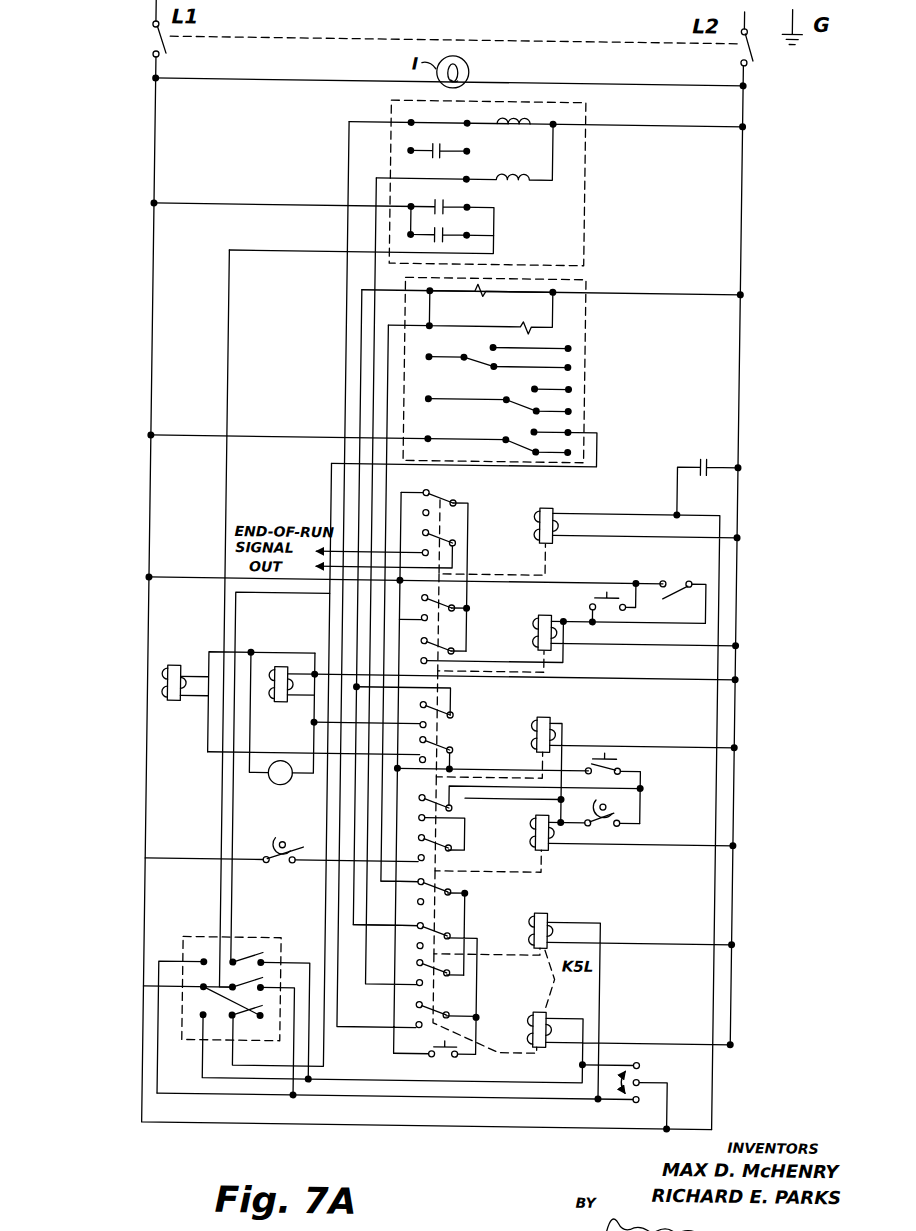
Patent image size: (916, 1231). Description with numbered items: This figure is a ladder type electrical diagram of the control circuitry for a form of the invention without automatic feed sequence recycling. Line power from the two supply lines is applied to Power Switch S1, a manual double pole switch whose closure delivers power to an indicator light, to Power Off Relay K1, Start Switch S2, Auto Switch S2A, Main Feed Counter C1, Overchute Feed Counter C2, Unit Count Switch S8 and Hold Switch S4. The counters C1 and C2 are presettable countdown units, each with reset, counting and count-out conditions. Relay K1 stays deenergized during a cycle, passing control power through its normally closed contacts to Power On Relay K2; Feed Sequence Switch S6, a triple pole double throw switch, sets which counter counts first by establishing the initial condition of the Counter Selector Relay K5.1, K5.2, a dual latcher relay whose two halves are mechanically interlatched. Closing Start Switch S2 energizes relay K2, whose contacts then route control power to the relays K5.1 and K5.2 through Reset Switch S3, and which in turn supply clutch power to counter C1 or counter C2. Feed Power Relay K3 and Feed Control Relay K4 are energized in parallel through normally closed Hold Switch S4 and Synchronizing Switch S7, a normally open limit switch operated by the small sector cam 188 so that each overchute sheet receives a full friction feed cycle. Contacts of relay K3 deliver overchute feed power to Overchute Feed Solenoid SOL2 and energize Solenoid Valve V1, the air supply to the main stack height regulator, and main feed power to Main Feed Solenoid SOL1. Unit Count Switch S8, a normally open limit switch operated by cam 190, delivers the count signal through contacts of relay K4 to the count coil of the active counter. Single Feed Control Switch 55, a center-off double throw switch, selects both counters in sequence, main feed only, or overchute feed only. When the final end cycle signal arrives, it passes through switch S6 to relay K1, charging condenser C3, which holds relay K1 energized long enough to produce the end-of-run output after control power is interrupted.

The small sector cam 188 is at (640, 803).
The cam of unit count switch 190 is at (264, 843).
The single feed control switch 55 is at (626, 1104).
The Power Switch S1 is at (92, 92).
The Start Switch S2 is at (637, 581).
The Auto Switch S2A is at (690, 577).
The Reset Switch S3 is at (536, 1081).
The Hold Switch S4 is at (682, 744).
The Feed Sequence Switch S6 is at (182, 950).
The Synchronizing Switch S7 is at (598, 829).
The Unit Count Switch S8 is at (186, 879).
The Power Off Relay K1 is at (857, 543).
The Power On Relay K2 is at (857, 664).
The Feed Power Relay K3 is at (835, 780).
The Feed Control Relay K4 is at (835, 869).
The Counter Selector Relay K5.1 is at (850, 1073).
The Counter Selector Relay K5.2 is at (543, 985).
The Main Feed Counter C1 is at (722, 193).
The Overchute Feed Counter C2 is at (582, 326).
The condenser C3 is at (709, 477).
The Main Feed Solenoid SOL1 is at (162, 660).
The Overchute Feed Solenoid SOL2 is at (266, 665).
The Solenoid Valve V1 is at (266, 779).